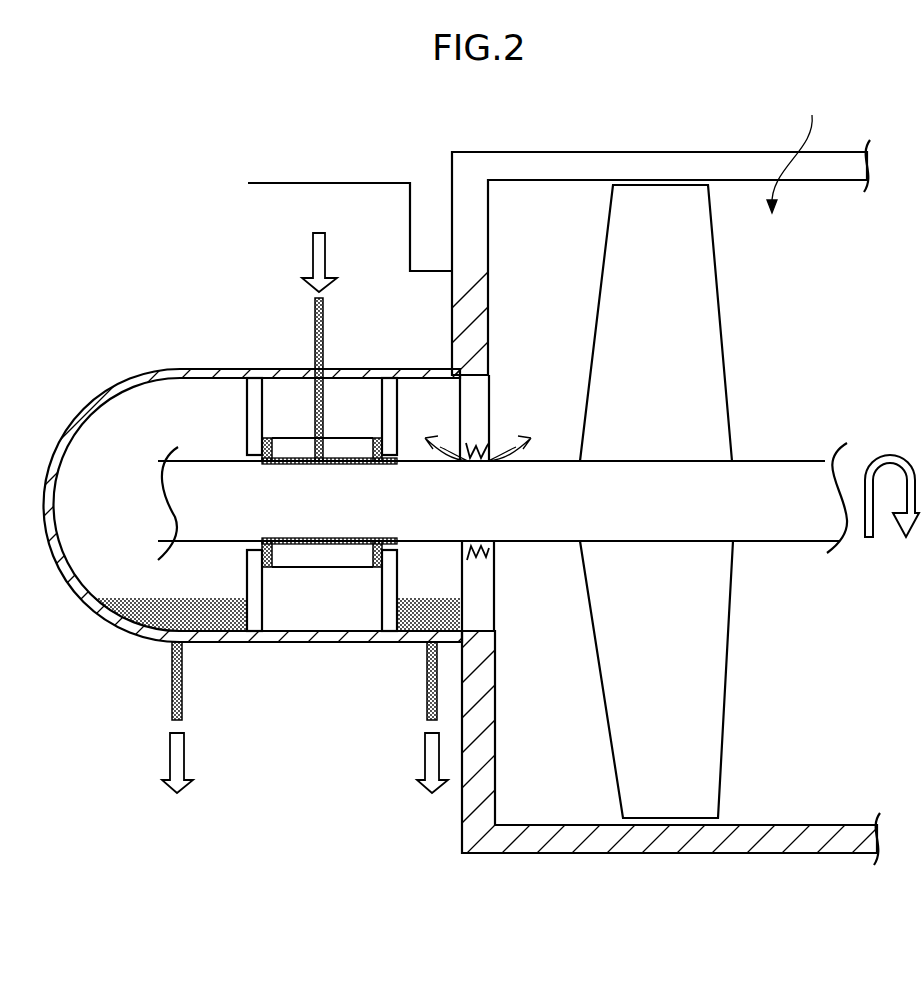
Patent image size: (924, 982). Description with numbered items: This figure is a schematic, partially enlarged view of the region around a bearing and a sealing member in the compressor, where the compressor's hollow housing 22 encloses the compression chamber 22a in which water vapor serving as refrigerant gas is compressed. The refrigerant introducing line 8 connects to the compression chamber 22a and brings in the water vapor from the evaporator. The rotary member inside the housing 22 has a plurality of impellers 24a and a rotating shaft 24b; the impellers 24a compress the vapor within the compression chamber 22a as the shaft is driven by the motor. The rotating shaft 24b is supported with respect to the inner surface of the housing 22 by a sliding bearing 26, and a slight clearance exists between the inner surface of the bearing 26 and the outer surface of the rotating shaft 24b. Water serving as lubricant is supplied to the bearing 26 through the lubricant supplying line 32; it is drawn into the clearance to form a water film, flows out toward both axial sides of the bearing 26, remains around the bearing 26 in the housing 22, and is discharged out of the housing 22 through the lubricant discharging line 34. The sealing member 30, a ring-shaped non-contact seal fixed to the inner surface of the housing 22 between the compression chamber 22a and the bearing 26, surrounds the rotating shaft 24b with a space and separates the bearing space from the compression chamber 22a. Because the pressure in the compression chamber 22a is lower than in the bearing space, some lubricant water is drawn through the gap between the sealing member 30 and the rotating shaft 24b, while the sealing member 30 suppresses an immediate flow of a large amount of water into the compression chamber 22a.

The refrigerant introducing line 8 is at (340, 182).
The housing 22 is at (565, 150).
The compression chamber 22a is at (801, 151).
The impeller 24a is at (720, 308).
The rotating shaft 24b is at (780, 455).
The bearing 26 is at (300, 597).
The sealing member 30 is at (490, 400).
The lubricant supplying line 32 is at (315, 340).
The lubricant discharging line 34 is at (172, 670).